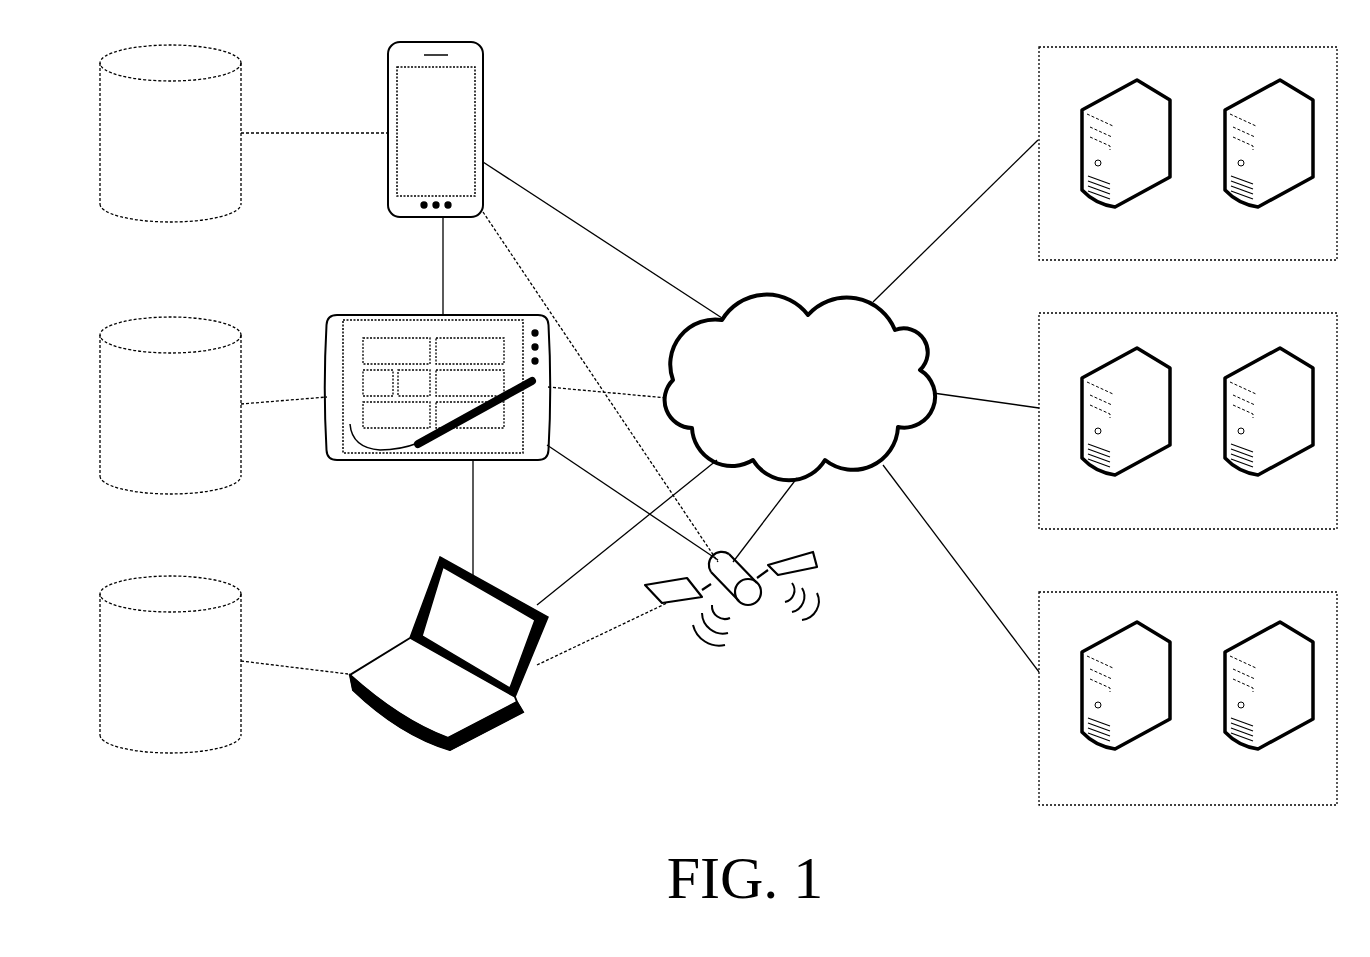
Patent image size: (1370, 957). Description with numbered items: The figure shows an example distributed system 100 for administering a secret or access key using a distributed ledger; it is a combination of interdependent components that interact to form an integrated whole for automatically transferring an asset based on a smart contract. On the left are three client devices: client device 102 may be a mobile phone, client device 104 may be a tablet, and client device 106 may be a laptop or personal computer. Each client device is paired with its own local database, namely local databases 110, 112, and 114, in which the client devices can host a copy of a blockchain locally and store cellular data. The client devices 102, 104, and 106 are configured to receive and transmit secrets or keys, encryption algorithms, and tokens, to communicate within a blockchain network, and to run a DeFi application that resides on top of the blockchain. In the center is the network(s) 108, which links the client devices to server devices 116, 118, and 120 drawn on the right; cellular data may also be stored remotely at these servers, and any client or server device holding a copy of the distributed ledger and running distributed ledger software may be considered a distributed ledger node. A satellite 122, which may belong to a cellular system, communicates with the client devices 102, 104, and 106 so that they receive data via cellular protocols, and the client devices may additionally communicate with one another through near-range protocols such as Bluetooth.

The system 100 is at (816, 94).
The client device 102 is at (418, 152).
The client device 104 is at (417, 499).
The client device 106 is at (424, 791).
The network(s) 108 is at (781, 431).
The local database 110 is at (152, 147).
The local database 112 is at (152, 418).
The local database 114 is at (152, 678).
The server device 116 is at (1172, 247).
The server device 118 is at (1172, 515).
The server device 120 is at (1172, 795).
The satellite 122 is at (708, 707).